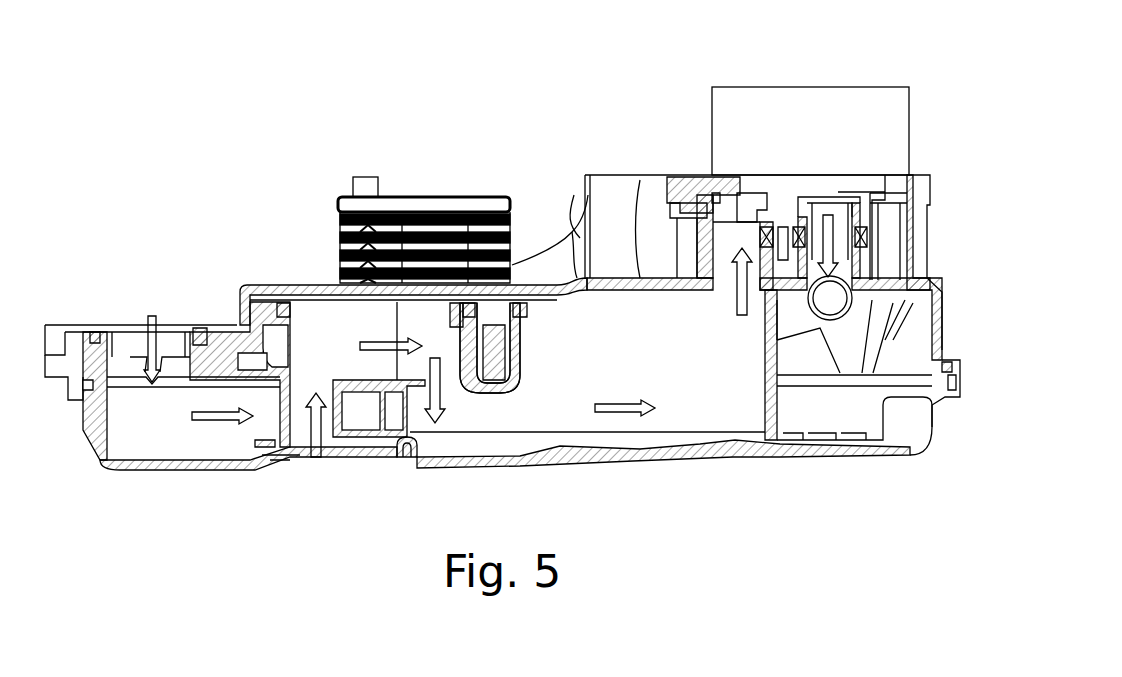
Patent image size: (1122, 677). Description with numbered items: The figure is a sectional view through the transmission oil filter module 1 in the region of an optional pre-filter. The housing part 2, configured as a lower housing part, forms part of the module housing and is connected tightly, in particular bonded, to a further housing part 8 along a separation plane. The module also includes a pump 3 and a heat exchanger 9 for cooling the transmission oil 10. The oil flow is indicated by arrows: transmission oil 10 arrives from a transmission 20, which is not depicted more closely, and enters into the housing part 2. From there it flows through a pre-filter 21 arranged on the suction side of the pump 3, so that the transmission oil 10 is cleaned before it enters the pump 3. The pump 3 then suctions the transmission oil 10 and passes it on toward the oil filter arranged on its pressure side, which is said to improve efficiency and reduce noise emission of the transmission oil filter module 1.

The transmission oil filter module 1 is at (645, 133).
The housing part 2 is at (737, 450).
The pump 3 is at (797, 112).
The further housing part 8 is at (573, 200).
The heat exchanger 9 is at (465, 203).
The transmission oil 10 is at (152, 314).
The transmission 20 is at (95, 278).
The pre-filter 21 is at (262, 462).